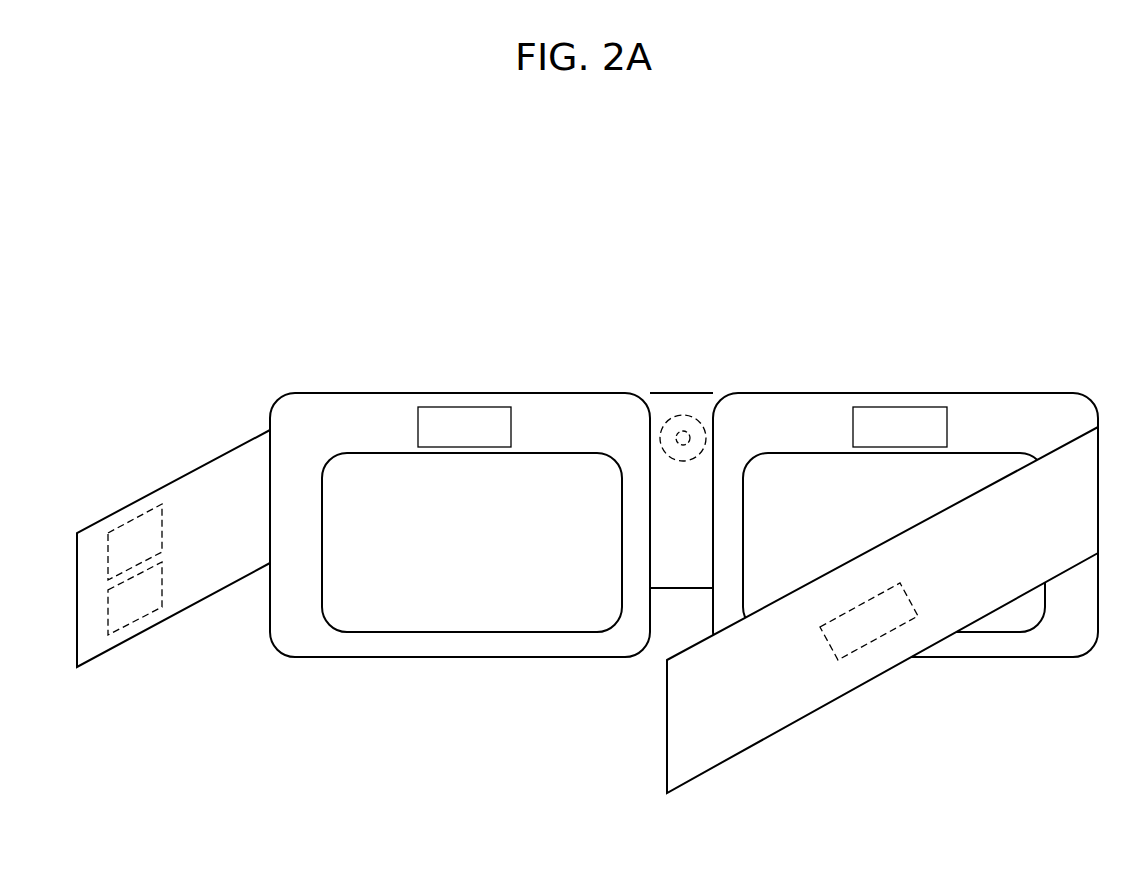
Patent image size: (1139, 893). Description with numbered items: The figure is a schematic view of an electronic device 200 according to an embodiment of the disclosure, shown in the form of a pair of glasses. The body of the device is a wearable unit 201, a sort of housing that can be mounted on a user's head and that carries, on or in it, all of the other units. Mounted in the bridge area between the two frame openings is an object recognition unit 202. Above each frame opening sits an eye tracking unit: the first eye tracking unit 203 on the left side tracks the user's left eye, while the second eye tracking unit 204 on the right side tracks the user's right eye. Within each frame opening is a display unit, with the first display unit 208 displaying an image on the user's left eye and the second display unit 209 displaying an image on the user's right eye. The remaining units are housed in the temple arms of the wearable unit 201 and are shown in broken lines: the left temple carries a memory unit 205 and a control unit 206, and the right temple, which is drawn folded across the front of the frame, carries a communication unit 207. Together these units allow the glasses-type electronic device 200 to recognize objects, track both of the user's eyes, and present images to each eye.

The electronic device 200 is at (142, 352).
The wearable unit 201 is at (462, 658).
The object recognition unit 202 is at (683, 413).
The first eye tracking unit 203 is at (465, 406).
The second eye tracking unit 204 is at (900, 406).
The memory unit 205 is at (137, 518).
The control unit 206 is at (135, 622).
The communication unit 207 is at (875, 628).
The first display unit 208 is at (372, 482).
The second display unit 209 is at (995, 466).